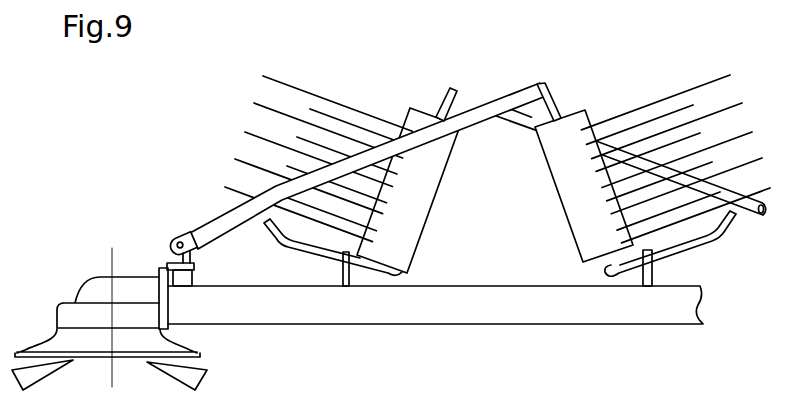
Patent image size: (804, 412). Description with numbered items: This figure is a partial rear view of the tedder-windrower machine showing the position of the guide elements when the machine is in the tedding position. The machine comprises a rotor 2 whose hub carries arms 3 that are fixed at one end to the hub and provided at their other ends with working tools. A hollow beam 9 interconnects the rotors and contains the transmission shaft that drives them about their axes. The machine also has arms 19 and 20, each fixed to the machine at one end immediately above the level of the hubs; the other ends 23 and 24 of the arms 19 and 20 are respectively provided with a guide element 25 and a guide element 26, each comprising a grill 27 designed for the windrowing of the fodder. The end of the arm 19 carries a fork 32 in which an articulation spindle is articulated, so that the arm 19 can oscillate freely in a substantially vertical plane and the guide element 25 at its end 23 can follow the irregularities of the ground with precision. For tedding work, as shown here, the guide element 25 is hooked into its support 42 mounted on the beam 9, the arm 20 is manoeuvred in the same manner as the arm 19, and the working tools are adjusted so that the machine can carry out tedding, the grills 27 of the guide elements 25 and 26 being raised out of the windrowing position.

The rotor 2 is at (55, 318).
The arms 3 is at (43, 372).
The hollow beam 9 is at (522, 294).
The arm 19 is at (516, 126).
The arm 20 is at (221, 214).
The end of arm 23 is at (483, 103).
The end of arm 24 is at (456, 97).
The guide element 25 is at (461, 204).
The guide element 26 is at (562, 210).
The grill 27 is at (333, 103).
The fork 32 is at (171, 243).
The support 42 is at (342, 268).